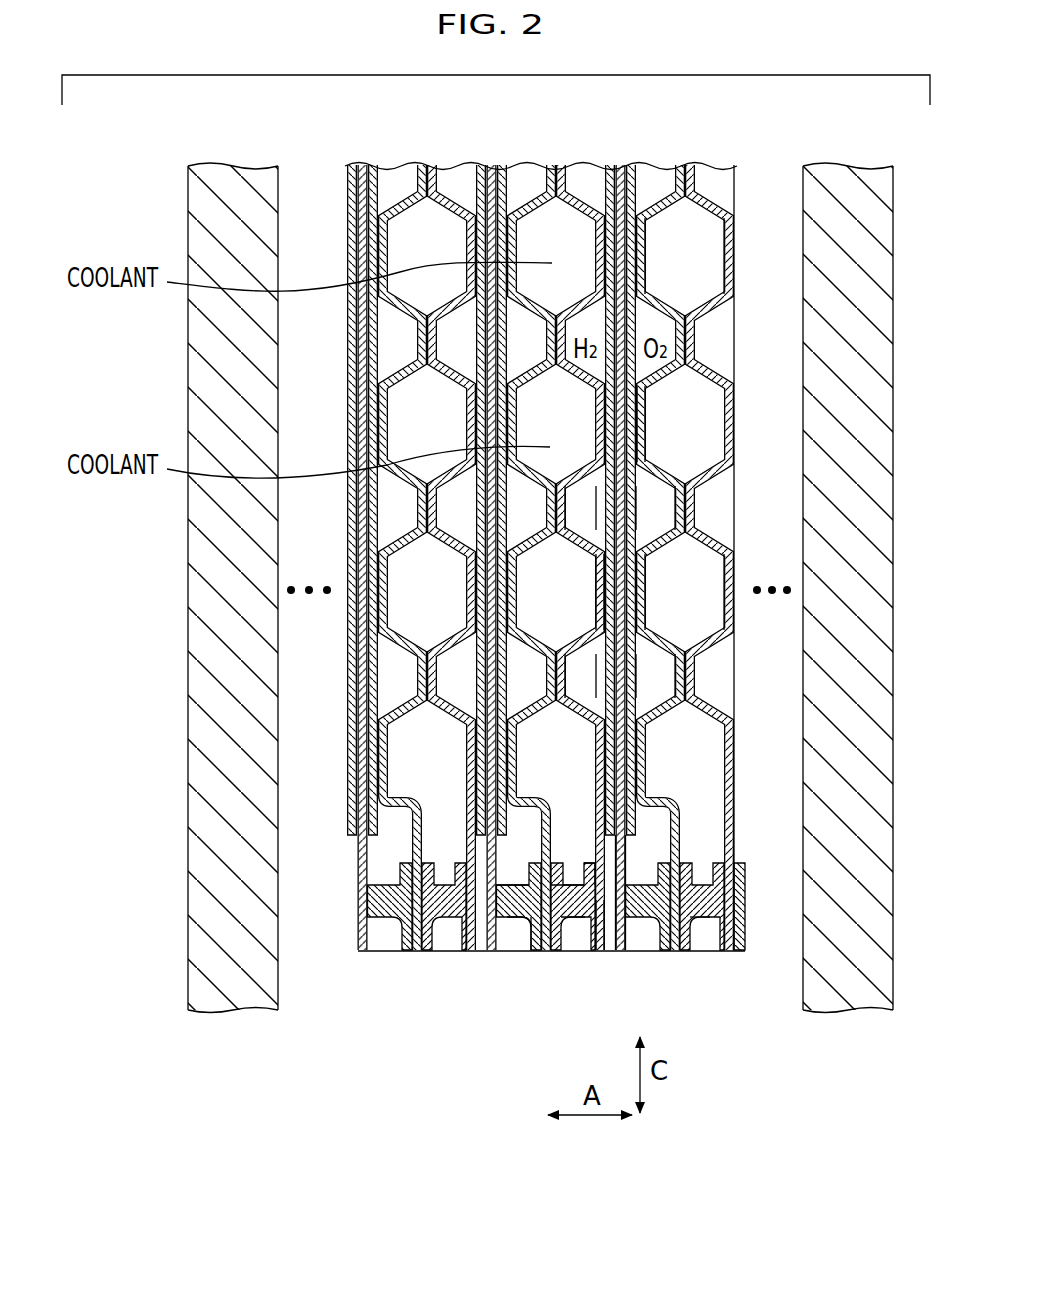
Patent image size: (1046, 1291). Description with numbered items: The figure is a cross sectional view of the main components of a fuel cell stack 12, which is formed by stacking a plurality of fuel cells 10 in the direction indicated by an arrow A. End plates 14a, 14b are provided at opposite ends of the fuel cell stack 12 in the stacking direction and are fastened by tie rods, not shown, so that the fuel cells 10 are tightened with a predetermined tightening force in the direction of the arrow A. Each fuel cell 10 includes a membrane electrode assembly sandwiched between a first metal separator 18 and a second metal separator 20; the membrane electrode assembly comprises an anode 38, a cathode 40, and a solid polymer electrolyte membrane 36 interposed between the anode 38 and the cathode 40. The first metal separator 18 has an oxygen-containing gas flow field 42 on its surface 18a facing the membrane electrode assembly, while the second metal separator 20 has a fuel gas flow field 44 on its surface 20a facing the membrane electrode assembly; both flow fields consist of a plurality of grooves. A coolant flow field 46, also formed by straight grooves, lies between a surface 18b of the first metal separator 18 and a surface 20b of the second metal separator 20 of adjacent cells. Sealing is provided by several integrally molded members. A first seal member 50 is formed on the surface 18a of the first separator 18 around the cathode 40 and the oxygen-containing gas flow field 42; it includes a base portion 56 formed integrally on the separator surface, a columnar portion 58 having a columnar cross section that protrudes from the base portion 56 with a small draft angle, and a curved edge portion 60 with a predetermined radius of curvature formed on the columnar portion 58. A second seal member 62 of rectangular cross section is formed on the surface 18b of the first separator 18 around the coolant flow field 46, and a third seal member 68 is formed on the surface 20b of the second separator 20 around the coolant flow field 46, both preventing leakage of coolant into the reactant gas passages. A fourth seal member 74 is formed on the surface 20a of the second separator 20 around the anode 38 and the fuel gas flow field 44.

The fuel cell 10 is at (367, 150).
The fuel cell stack 12 is at (330, 112).
The end plate 14a is at (855, 996).
The end plate 14b is at (231, 996).
The first metal separator 18 is at (650, 255).
The surface of first metal separator 18a is at (641, 434).
The surface of first metal separator 18b is at (642, 408).
The second metal separator 20 is at (592, 427).
The surface of second metal separator 20a is at (598, 607).
The surface of second metal separator 20b is at (598, 578).
The solid polymer electrolyte membrane 36 is at (620, 163).
The anode 38 is at (610, 164).
The cathode 40 is at (631, 164).
The oxygen-containing gas flow field 42 is at (655, 592).
The fuel gas flow field 44 is at (582, 592).
The coolant flow field 46 is at (684, 424).
The first seal member 50 is at (653, 954).
The base portion 56 is at (590, 865).
The columnar portion 58 is at (512, 885).
The curved edge portion 60 is at (567, 887).
The second seal member 62 is at (688, 920).
The third seal member 68 is at (595, 956).
The fourth seal member 74 is at (610, 937).